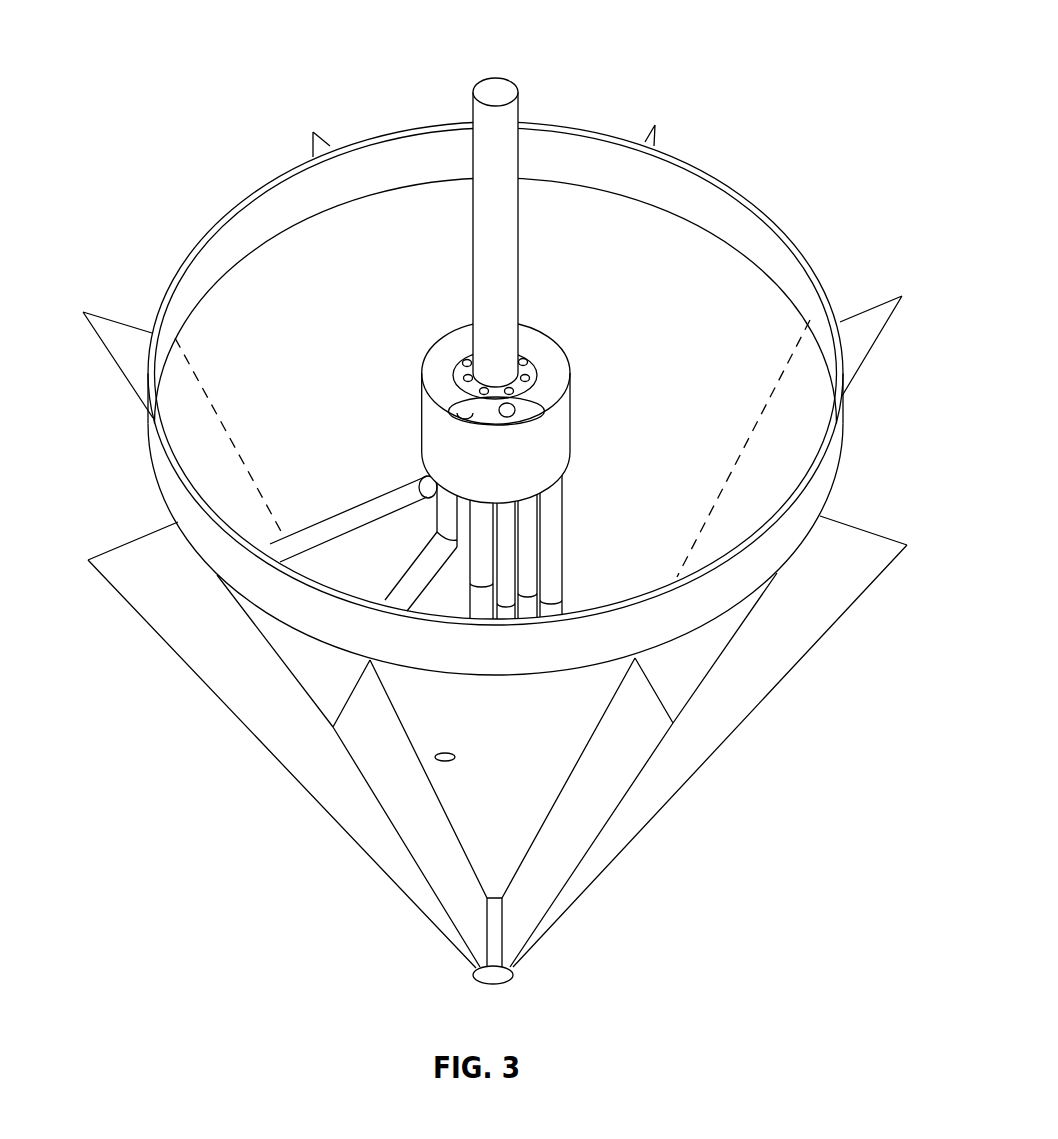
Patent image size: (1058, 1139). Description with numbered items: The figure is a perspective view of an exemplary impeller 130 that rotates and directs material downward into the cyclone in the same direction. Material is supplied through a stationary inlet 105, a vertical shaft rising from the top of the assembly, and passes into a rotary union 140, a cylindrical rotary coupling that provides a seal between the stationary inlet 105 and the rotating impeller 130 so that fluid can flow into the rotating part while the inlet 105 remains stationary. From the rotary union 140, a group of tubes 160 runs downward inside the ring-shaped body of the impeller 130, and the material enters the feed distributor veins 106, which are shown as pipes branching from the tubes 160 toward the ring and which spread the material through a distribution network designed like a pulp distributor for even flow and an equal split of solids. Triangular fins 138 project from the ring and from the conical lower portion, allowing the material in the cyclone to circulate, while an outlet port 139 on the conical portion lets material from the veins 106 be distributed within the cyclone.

The impeller 130 is at (500, 503).
The inlet 105 is at (522, 105).
The rotary union 140 is at (562, 423).
The tubes 160 is at (555, 513).
The veins 106 is at (382, 505).
The fins 138 is at (132, 355).
The outlet ports 139 is at (458, 755).